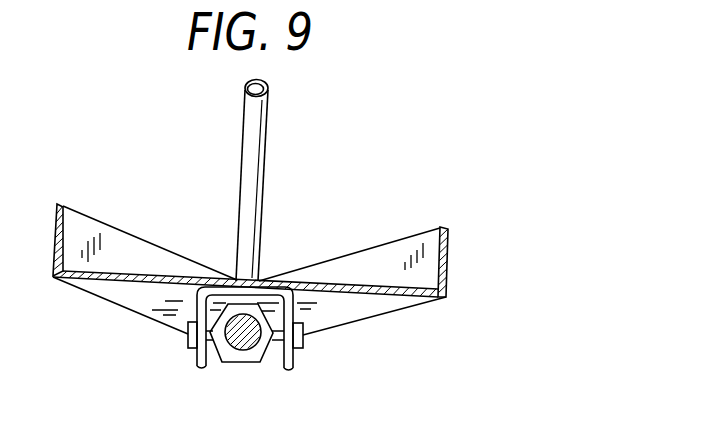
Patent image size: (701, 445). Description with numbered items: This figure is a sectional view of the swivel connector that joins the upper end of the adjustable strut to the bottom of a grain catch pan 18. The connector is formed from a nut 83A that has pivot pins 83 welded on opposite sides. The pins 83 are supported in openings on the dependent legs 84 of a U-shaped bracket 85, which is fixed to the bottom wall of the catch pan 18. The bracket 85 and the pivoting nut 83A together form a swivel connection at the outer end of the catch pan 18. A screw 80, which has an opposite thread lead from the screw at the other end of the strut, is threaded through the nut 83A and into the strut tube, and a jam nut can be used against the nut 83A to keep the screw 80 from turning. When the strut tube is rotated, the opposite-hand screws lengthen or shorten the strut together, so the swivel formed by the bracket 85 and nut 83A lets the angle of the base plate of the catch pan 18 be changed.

The grain catch pan 18 is at (410, 232).
The screw 80 is at (237, 349).
The pivot pins 83 is at (187, 334).
The nut 83A is at (230, 313).
The dependent legs 84 is at (192, 360).
The U-shaped bracket 85 is at (196, 303).